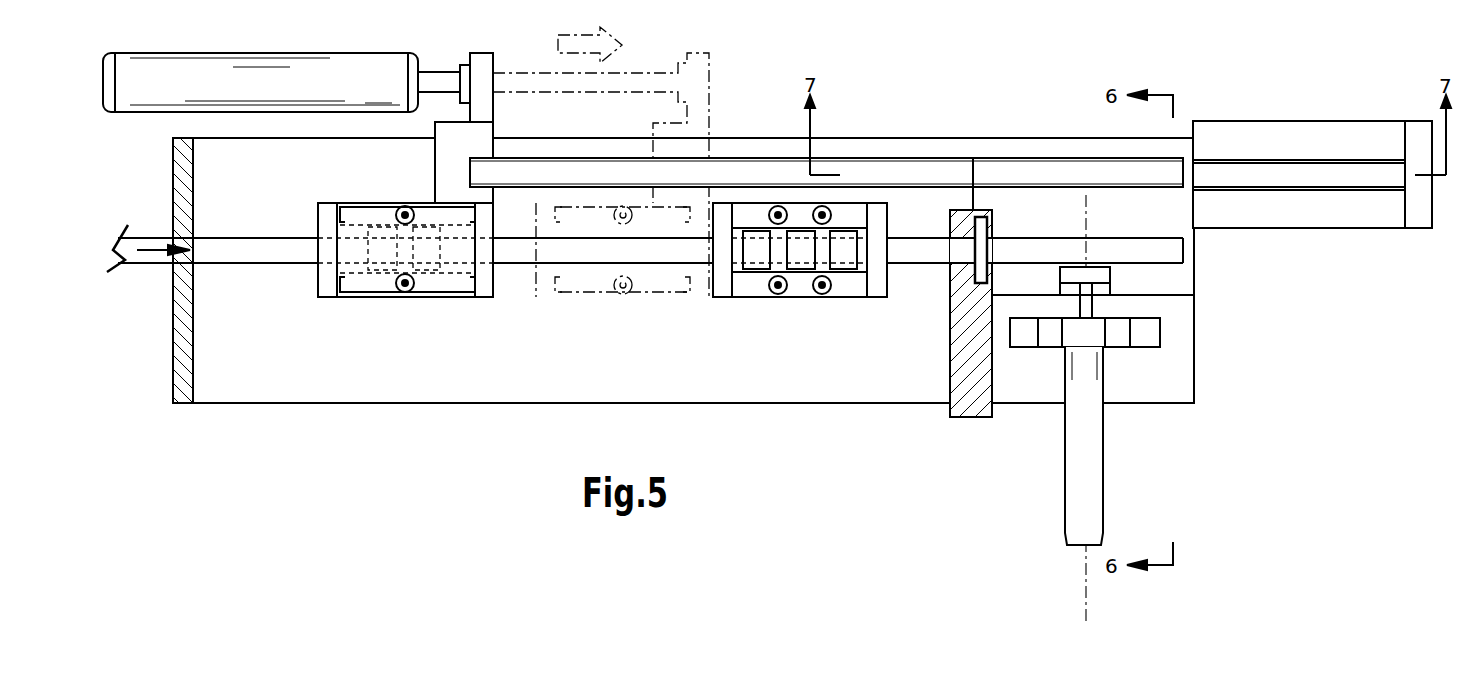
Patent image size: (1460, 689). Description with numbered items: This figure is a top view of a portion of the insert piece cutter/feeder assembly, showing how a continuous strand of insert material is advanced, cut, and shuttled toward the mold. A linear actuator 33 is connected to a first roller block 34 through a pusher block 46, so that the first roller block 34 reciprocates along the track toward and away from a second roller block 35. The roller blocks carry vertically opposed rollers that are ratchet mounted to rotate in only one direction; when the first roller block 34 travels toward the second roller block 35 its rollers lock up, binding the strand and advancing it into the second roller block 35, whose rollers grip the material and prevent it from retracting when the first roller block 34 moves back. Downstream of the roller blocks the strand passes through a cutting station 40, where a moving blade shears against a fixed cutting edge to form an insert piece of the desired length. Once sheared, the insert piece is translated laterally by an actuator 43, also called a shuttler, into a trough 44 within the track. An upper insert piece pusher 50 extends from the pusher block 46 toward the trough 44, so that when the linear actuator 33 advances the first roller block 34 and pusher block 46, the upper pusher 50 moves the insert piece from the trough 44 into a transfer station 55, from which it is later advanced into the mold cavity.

The linear actuator 33 is at (309, 72).
The pusher block 46 is at (452, 147).
The first roller block 34 is at (323, 288).
The second roller block 35 is at (877, 298).
The upper insert piece pusher 50 is at (725, 174).
The trough 44 is at (1030, 172).
The cutting station 40 is at (958, 428).
The actuator 43 is at (1093, 475).
The transfer station 55 is at (1275, 152).